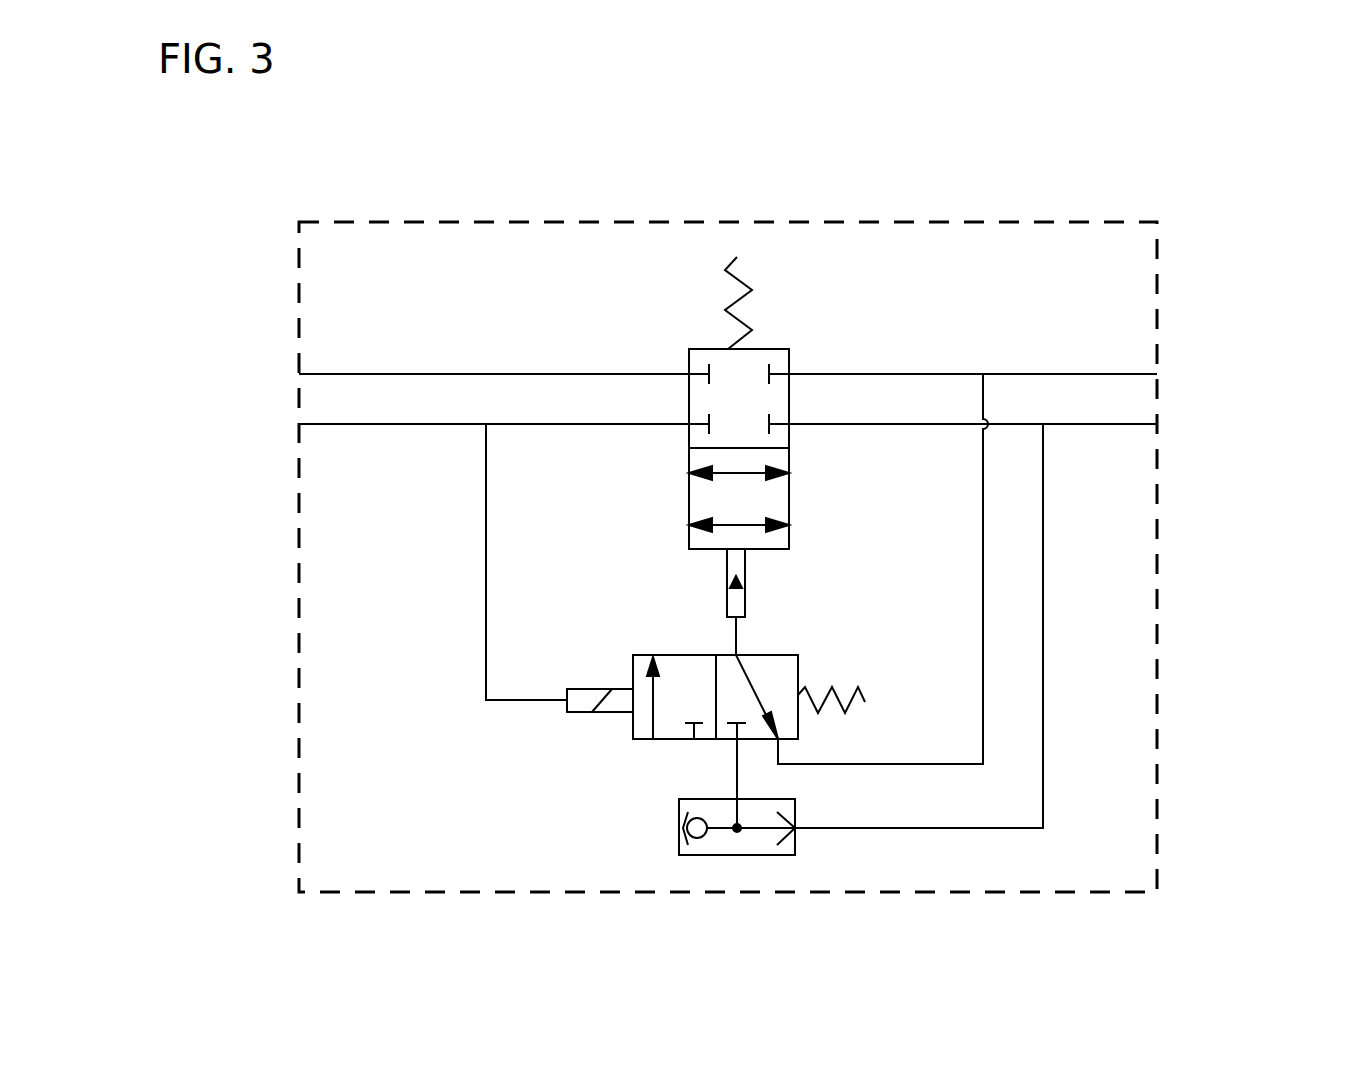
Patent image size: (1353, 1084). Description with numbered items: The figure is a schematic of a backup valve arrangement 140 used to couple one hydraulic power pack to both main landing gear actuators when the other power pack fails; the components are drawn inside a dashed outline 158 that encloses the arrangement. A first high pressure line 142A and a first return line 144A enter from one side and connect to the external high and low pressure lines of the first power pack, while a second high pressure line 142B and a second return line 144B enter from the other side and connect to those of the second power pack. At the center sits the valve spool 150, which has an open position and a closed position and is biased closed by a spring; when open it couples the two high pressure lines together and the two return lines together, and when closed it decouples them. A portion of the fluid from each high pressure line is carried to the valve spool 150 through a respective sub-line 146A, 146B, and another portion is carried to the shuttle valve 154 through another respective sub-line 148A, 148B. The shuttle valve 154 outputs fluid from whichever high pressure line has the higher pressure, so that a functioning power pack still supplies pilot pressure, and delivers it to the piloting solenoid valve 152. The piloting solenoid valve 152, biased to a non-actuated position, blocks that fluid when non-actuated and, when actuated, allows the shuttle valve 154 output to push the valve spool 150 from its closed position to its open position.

The backup valve arrangement 140 is at (874, 200).
The housing / manifold block 158 is at (512, 222).
The first return line 144A is at (400, 374).
The second return line 144B is at (1157, 374).
The first high pressure line 142A is at (426, 424).
The second high pressure line 142B is at (1157, 424).
The sub-line 146A is at (582, 424).
The sub-line 146B is at (897, 424).
The sub-line 148A is at (486, 582).
The sub-line 148B is at (1043, 787).
The valve spool 150 is at (689, 349).
The piloting solenoid valve 152 is at (632, 672).
The shuttle valve 154 is at (748, 855).